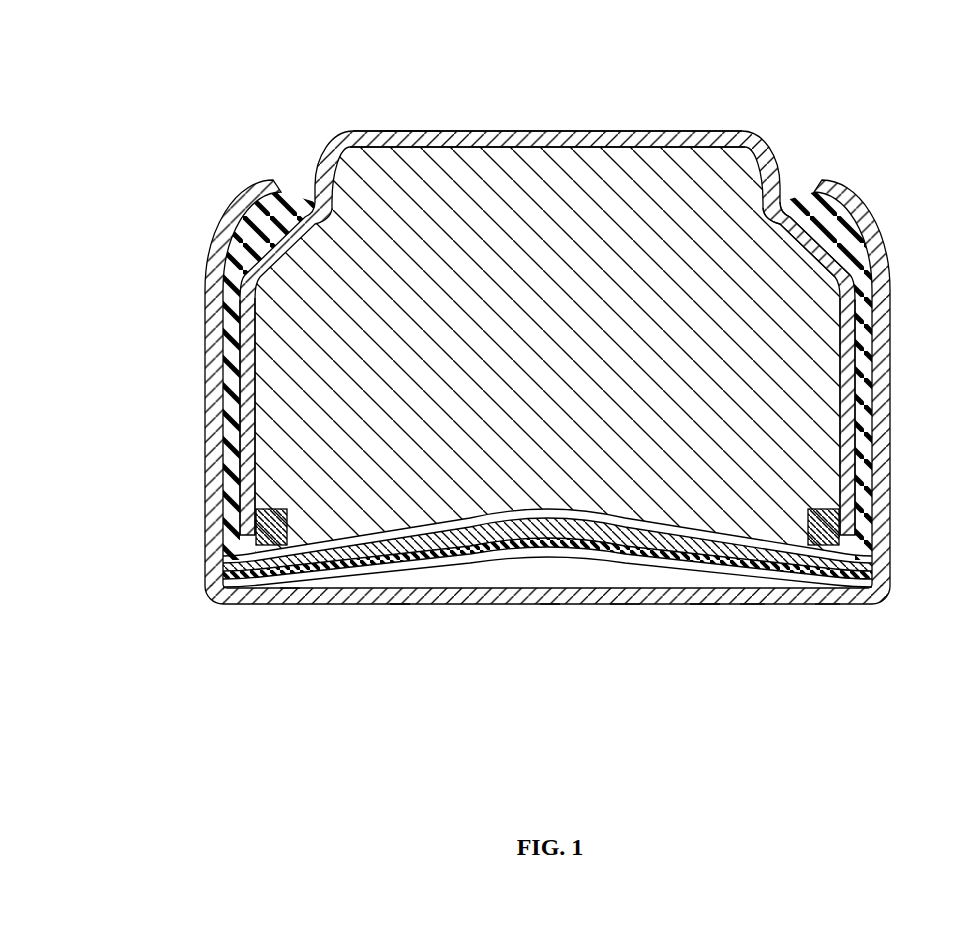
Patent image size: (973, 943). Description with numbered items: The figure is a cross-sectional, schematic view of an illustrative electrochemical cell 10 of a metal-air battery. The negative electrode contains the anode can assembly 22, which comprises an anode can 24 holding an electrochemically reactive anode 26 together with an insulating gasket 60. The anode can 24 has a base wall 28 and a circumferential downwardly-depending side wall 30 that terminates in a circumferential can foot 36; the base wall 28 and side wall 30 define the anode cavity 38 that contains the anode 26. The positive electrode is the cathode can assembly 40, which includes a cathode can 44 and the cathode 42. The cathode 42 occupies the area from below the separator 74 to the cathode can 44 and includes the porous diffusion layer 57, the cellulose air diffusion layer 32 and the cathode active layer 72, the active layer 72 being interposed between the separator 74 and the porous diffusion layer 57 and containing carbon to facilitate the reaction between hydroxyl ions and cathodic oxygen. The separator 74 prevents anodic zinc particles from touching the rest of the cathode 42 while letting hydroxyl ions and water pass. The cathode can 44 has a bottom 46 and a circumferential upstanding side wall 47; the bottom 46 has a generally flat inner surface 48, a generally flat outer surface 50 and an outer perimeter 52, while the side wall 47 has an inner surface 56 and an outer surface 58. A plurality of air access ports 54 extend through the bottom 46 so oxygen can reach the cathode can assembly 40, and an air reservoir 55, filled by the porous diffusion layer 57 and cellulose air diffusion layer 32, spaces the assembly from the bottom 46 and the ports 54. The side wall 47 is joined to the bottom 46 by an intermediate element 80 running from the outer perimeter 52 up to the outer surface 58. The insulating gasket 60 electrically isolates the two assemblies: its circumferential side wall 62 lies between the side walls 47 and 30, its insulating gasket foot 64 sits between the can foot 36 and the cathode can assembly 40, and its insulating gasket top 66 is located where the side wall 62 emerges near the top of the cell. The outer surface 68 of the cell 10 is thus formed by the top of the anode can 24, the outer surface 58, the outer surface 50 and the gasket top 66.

The cell 10 is at (537, 383).
The anode can assembly 22 is at (707, 121).
The anode can 24 is at (645, 122).
The anode 26 is at (520, 495).
The base wall 28 is at (483, 131).
The side wall 30 is at (872, 303).
The cellulose air diffusion layer 32 is at (572, 557).
The can foot 36 is at (245, 515).
The anode cavity 38 is at (548, 235).
The cathode can assembly 40 is at (624, 622).
The cathode 42 is at (458, 570).
The cathode can 44 is at (750, 622).
The bottom 46 is at (828, 622).
The side wall 47 is at (195, 342).
The inner surface 48 is at (258, 546).
The outer surface 50 is at (324, 604).
The outer perimeter 52 is at (203, 600).
The air access ports 54 is at (398, 596).
The air reservoir 55 is at (652, 600).
The inner surface 56 is at (873, 355).
The porous diffusion layer 57 is at (503, 557).
The outer surface 58 is at (890, 400).
The insulating gasket 60 is at (218, 286).
The side wall 62 is at (232, 385).
The insulating gasket foot 64 is at (853, 540).
The insulating gasket top 66 is at (785, 200).
The outer surface 68 is at (408, 119).
The active layer 72 is at (596, 557).
The separator 74 is at (289, 600).
The intermediate element 80 is at (882, 600).